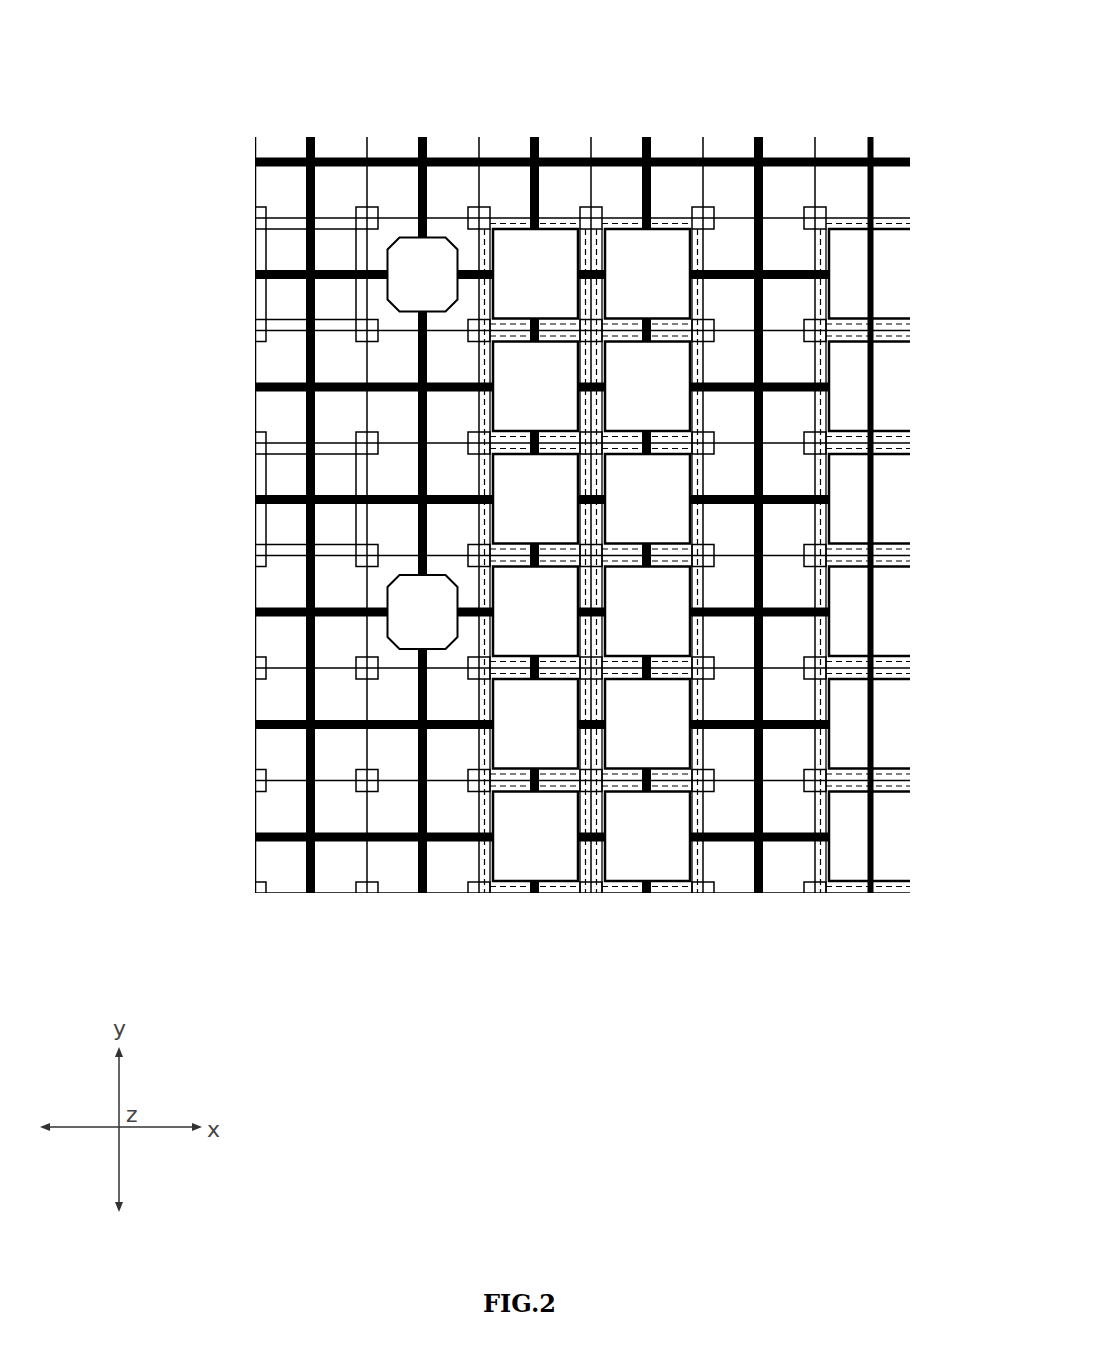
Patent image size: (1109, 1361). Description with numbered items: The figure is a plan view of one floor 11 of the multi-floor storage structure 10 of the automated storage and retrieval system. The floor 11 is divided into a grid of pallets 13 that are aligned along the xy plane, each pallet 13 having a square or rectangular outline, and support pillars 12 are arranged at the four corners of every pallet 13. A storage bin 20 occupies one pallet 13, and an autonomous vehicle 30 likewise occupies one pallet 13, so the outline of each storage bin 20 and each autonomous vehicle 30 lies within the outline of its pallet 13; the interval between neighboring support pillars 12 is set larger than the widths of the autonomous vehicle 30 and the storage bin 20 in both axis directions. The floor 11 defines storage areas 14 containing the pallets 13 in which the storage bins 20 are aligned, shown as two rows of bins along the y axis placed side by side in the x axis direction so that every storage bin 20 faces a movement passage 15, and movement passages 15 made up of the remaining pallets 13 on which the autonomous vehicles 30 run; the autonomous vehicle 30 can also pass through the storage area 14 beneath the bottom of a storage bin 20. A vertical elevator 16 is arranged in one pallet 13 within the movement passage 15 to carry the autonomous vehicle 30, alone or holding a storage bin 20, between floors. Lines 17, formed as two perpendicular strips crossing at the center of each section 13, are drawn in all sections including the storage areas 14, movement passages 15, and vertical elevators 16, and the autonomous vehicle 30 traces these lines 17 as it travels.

The multi-floor storage structure 10 is at (208, 101).
The floor 11 is at (246, 255).
The support pillar 12 is at (360, 430).
The pallet 13 is at (252, 598).
The storage area 14 is at (677, 895).
The movement passage 15 is at (246, 180).
The vertical elevator 16 is at (254, 297).
The line 17 is at (305, 745).
The storage bin 20 is at (550, 265).
The autonomous vehicle 30 is at (418, 262).